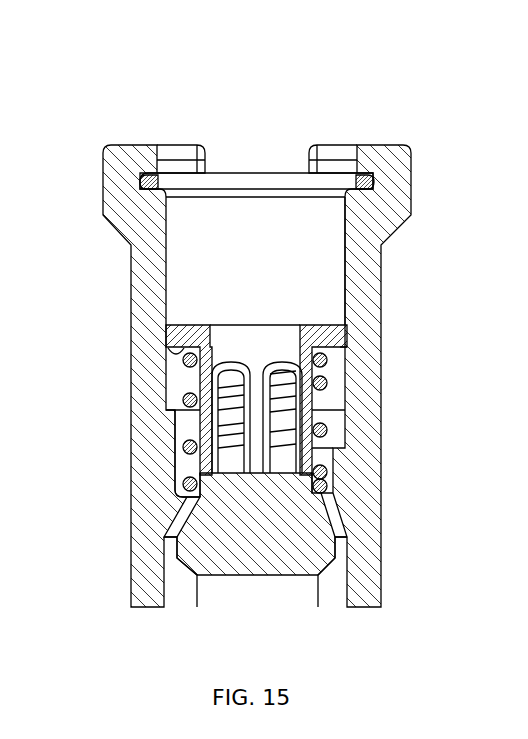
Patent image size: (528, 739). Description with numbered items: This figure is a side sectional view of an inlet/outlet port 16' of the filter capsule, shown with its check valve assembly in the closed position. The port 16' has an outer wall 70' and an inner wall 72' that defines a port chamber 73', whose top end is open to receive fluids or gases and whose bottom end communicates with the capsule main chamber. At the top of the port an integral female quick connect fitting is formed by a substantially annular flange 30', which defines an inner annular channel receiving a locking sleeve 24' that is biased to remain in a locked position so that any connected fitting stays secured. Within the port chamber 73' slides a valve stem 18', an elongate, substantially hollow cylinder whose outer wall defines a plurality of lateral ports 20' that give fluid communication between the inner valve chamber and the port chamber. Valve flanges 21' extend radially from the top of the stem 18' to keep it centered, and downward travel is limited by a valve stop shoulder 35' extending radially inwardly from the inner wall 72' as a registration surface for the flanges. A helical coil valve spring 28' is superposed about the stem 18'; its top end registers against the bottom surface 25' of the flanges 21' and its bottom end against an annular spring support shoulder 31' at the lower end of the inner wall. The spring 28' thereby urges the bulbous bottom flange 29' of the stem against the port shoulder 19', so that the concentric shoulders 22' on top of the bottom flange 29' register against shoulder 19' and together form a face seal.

The port 16' is at (270, 87).
The locking sleeve 24' is at (257, 150).
The annular flange 30' is at (258, 184).
The port chamber 73' is at (210, 261).
The inner wall 72' is at (312, 261).
The outer wall 70' is at (220, 376).
The valve stem 18' is at (256, 371).
The valve flanges 21' is at (387, 316).
The bottom surface of flanges 25' is at (129, 353).
The valve stop shoulder 35' is at (150, 448).
The lateral ports 20' is at (251, 423).
The valve spring 28' is at (322, 417).
The spring support shoulder 31' is at (141, 491).
The port shoulder 19' is at (316, 484).
The shoulders 22' is at (199, 572).
The bottom flange 29' is at (337, 590).